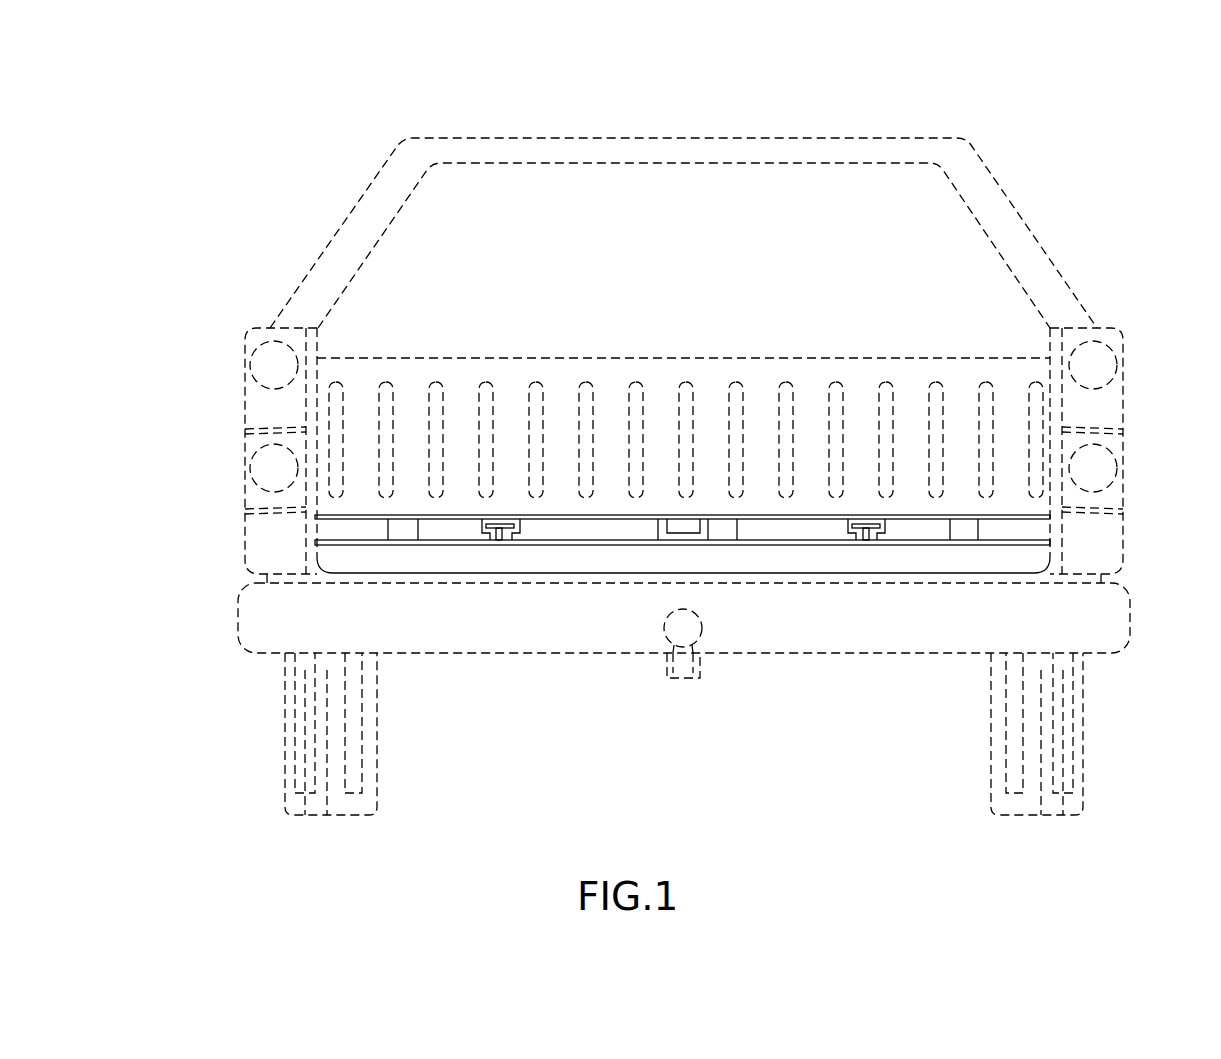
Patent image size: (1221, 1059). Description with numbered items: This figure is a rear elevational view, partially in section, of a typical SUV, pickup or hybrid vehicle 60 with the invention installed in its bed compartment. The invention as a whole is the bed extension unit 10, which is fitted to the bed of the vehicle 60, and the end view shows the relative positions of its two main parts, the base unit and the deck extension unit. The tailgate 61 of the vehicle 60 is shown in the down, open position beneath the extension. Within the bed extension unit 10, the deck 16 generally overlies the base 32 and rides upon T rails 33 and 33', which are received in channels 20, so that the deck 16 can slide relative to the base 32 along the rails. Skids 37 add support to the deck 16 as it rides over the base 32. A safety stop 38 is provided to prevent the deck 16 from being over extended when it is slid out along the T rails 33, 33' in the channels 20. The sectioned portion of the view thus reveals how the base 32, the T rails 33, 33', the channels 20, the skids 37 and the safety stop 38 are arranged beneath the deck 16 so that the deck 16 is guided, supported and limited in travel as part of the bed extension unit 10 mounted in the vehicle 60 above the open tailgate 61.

The bed extension unit 10 is at (703, 462).
The deck 16 is at (903, 518).
The channels 20 is at (518, 527).
The base 32 is at (1025, 543).
The T rail 33 is at (462, 628).
The T rail 33' is at (908, 622).
The skids 37 is at (402, 532).
The safety stop 38 is at (727, 533).
The vehicle 60 is at (1013, 168).
The tailgate 61 is at (798, 570).